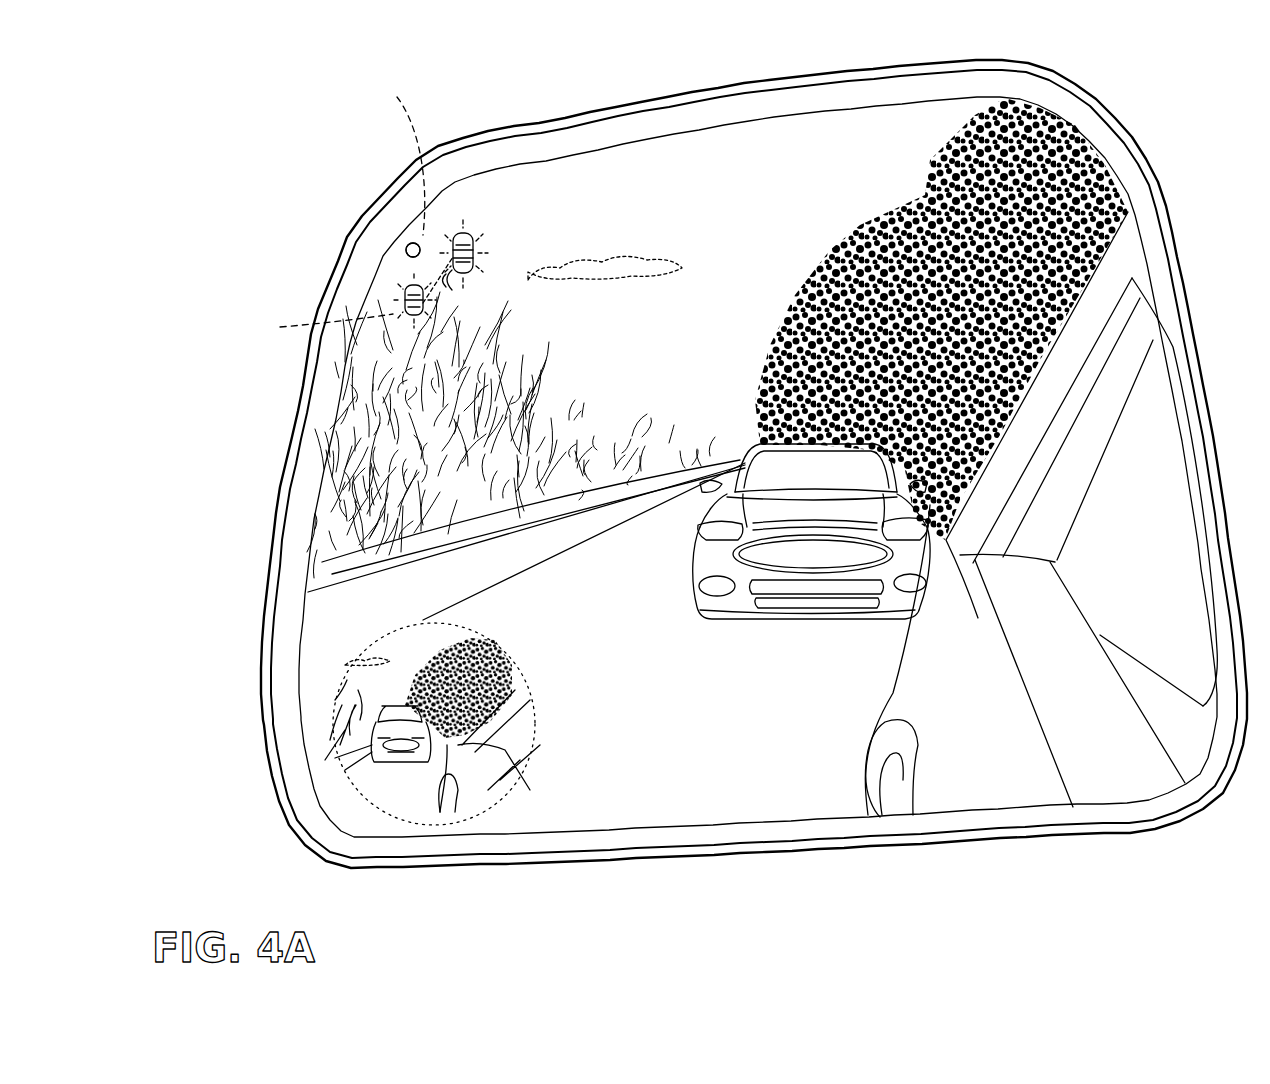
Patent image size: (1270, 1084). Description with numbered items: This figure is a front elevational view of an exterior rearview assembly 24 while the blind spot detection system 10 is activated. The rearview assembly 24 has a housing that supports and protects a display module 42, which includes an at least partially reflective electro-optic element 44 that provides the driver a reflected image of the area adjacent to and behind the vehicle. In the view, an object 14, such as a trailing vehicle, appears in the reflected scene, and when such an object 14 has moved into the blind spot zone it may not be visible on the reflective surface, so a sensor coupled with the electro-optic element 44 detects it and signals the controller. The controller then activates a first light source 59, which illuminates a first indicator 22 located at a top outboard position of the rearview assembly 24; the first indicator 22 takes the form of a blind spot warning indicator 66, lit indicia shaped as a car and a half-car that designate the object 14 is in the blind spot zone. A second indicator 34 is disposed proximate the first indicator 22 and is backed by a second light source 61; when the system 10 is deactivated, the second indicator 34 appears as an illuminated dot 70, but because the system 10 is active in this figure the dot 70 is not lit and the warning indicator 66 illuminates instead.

The blind spot detection system 10 is at (288, 108).
The object 14 is at (832, 512).
The first indicator 22 is at (473, 219).
The exterior rearview assembly 24 is at (1153, 155).
The second indicator 34 is at (404, 238).
The display module 42 is at (893, 147).
The electro-optic element 44 is at (668, 388).
The first light source 59 is at (316, 326).
The second light source 61 is at (395, 150).
The blind spot warning indicator 66 is at (406, 290).
The illuminated dot 70 is at (418, 241).